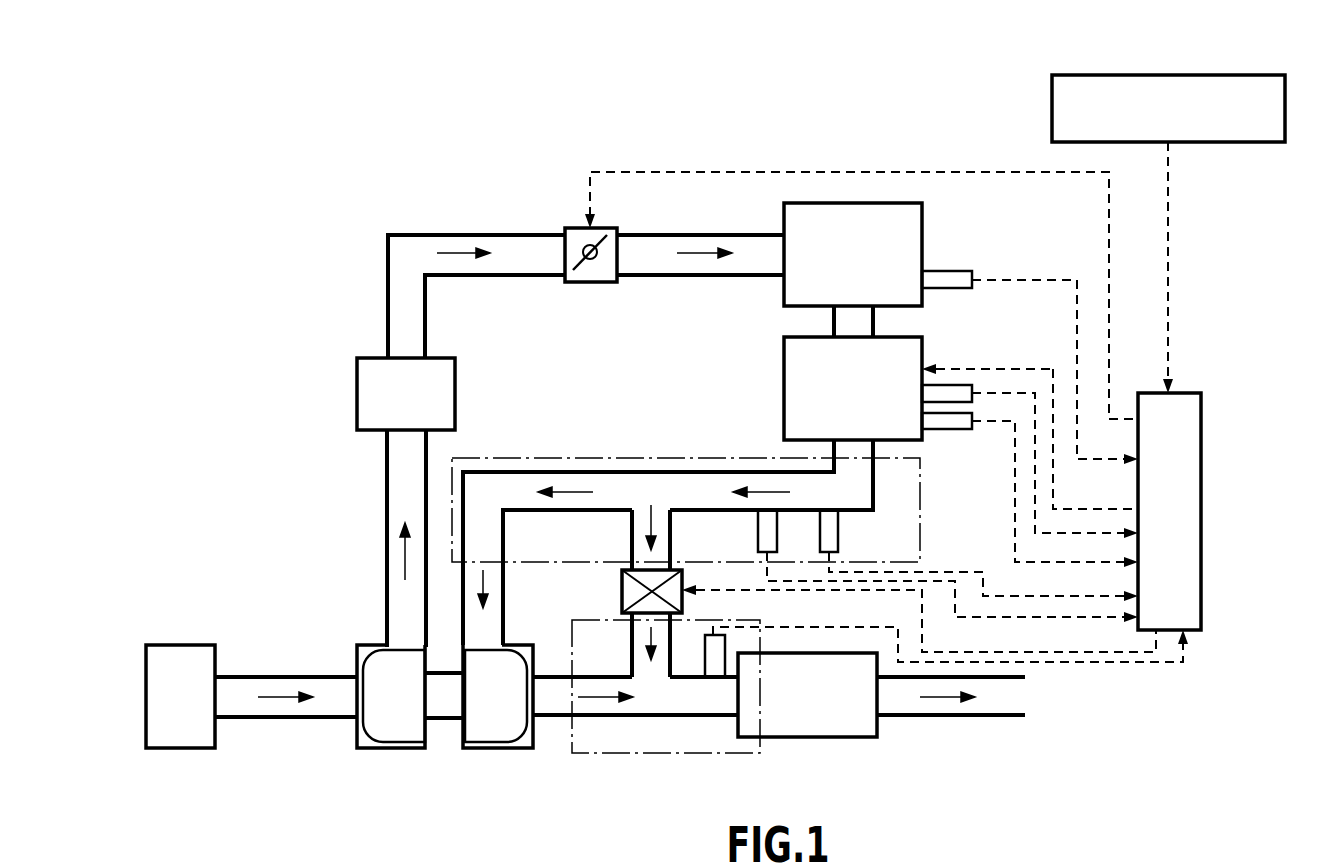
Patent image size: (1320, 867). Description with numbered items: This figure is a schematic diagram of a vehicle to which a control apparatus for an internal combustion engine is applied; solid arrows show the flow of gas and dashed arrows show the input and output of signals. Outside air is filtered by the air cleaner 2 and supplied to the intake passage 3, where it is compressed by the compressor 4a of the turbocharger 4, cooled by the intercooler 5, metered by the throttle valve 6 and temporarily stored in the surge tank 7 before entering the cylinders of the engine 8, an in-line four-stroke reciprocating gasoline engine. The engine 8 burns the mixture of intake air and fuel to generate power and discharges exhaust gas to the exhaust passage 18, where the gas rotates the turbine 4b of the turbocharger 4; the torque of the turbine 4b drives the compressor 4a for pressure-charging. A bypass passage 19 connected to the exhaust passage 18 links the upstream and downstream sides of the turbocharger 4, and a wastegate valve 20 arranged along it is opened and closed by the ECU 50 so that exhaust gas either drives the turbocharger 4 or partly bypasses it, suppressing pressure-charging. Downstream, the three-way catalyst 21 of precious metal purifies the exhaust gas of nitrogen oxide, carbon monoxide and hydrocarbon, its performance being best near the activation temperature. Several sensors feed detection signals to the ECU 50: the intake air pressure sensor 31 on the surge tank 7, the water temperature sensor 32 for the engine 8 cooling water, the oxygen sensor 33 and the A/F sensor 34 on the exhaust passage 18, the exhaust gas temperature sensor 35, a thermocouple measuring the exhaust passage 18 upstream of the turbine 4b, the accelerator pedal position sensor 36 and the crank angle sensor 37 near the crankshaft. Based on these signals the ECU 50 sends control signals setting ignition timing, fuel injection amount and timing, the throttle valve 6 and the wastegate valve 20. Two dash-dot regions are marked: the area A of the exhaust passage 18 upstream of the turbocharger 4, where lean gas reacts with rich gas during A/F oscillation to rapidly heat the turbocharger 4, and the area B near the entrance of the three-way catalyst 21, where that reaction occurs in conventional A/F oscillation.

The air cleaner 2 is at (178, 750).
The intake passage 3 is at (282, 720).
The turbocharger 4 is at (445, 750).
The compressor 4a is at (390, 750).
The turbine 4b is at (493, 750).
The intercooler 5 is at (455, 395).
The throttle valve 6 is at (588, 284).
The surge tank 7 is at (922, 223).
The engine 8 is at (784, 380).
The exhaust passage 18 is at (622, 472).
The bypass passage 19 is at (671, 536).
The wastegate valve 20 is at (620, 592).
The three-way catalyst 21 is at (805, 740).
The intake air pressure sensor 31 is at (947, 290).
The water temperature sensor 32 is at (947, 431).
The oxygen sensor 33 is at (840, 536).
The A/F sensor 34 is at (704, 664).
The exhaust gas temperature sensor 35 is at (778, 536).
The accelerator pedal position sensor 36 is at (1166, 74).
The crank angle sensor 37 is at (960, 384).
The ECU 50 is at (1201, 508).
The area A is at (703, 458).
The area B is at (660, 757).